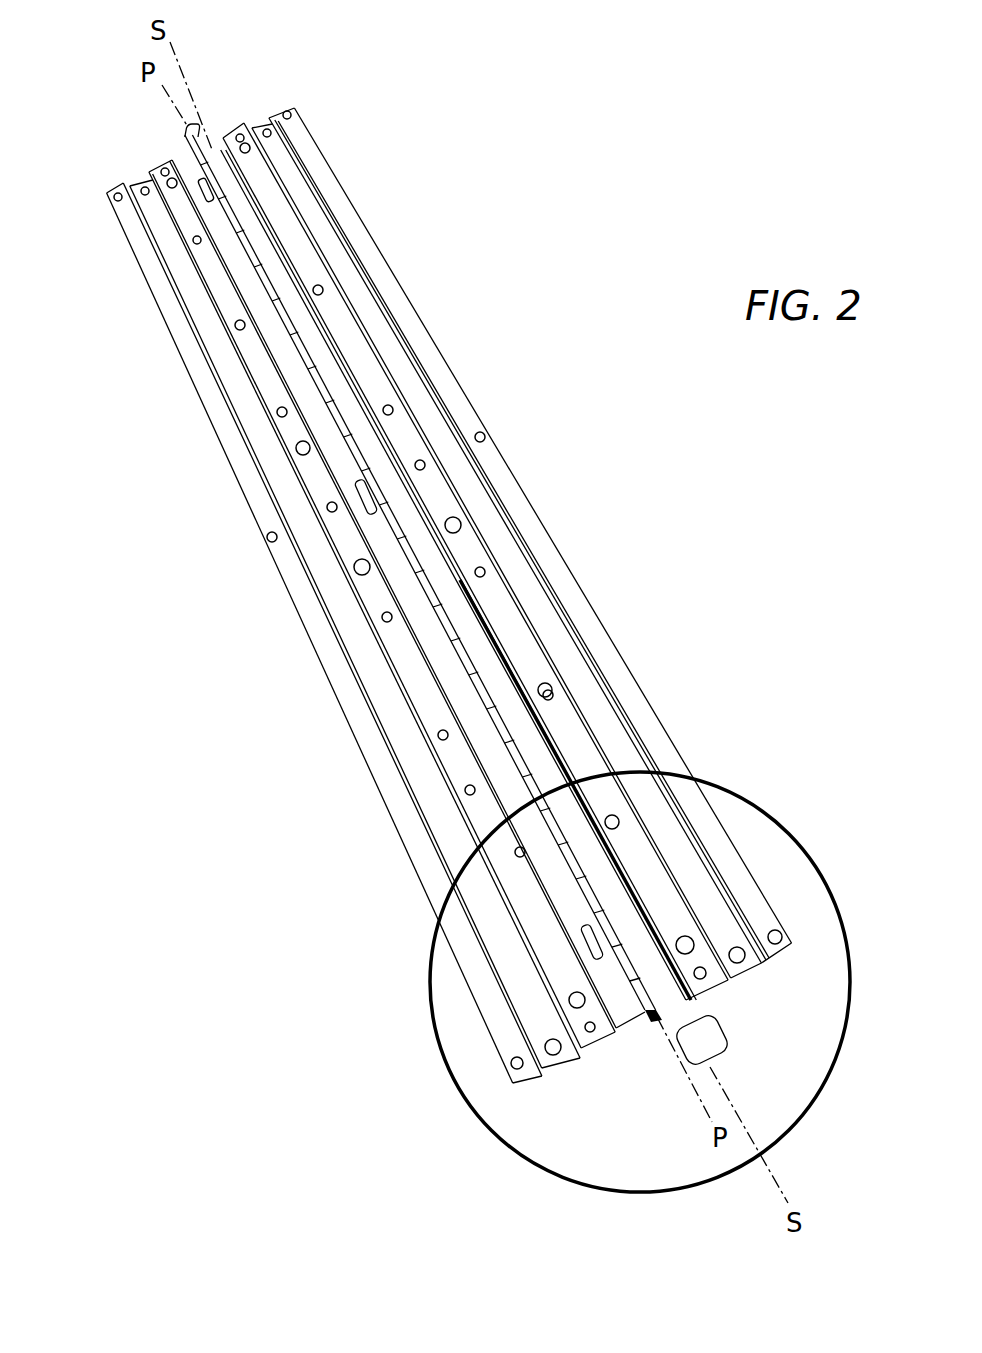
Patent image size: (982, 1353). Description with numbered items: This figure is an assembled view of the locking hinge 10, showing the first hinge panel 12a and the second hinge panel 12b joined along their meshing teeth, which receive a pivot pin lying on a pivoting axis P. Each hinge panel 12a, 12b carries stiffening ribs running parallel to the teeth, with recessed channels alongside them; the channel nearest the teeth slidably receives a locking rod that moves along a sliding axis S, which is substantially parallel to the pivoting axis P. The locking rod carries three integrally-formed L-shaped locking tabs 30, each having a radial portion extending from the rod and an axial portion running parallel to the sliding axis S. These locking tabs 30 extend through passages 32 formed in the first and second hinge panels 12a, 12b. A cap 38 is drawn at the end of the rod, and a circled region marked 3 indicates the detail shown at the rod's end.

The locking hinge 10 is at (586, 110).
The first hinge panel 12a is at (466, 376).
The second hinge panel 12b is at (293, 619).
The L-shaped locking tab 30 is at (204, 186).
The passage 32 is at (240, 222).
The end cap 38 is at (713, 1040).
The detail view circle (FIG. 3) 3 is at (480, 1117).